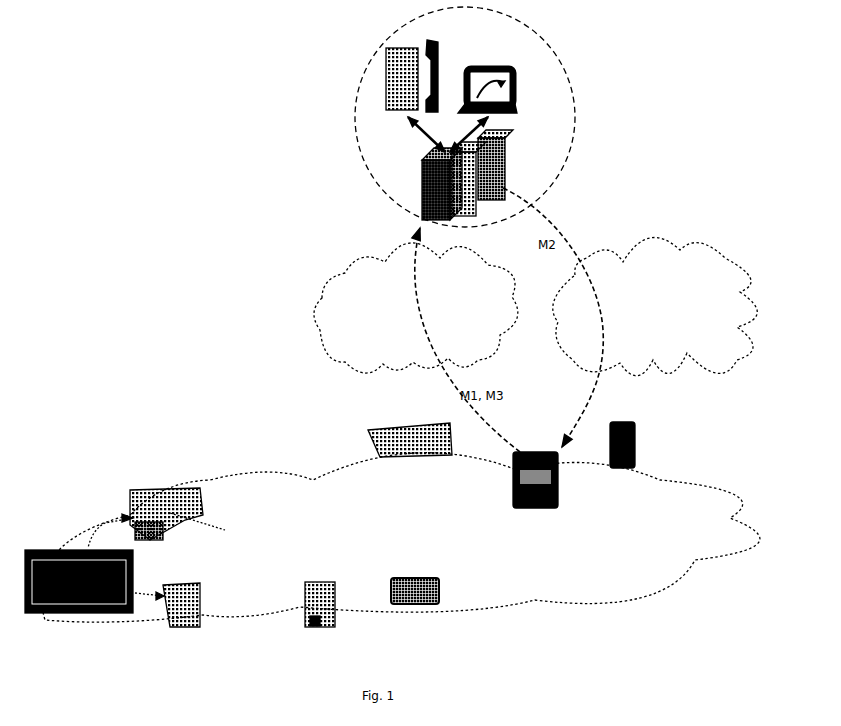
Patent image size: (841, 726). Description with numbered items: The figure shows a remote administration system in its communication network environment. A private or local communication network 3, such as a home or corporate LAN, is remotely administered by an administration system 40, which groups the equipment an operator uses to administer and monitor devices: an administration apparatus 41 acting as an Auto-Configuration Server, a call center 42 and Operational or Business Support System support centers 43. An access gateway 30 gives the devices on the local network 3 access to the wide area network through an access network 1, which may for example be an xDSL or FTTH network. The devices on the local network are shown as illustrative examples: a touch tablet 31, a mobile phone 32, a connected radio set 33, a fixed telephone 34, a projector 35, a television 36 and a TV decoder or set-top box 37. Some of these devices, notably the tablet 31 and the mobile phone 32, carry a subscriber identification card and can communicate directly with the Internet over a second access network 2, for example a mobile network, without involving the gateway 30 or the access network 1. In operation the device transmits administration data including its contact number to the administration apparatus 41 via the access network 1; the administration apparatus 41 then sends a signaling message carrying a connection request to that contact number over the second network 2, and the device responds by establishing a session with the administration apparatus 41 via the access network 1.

The access network 1 is at (328, 345).
The second access network 2 is at (650, 237).
The local communication network 3 is at (207, 485).
The access gateway 30 is at (388, 427).
The touch tablet 31 is at (558, 487).
The mobile phone 32 is at (633, 443).
The connected radio set 33 is at (420, 577).
The fixed telephone 34 is at (325, 577).
The projector 35 is at (200, 600).
The television 36 is at (33, 547).
The TV decoder 37 is at (138, 487).
The administration system 40 is at (566, 63).
The administration apparatus 41 is at (503, 143).
The call center 42 is at (497, 63).
The support centers 43 is at (418, 38).